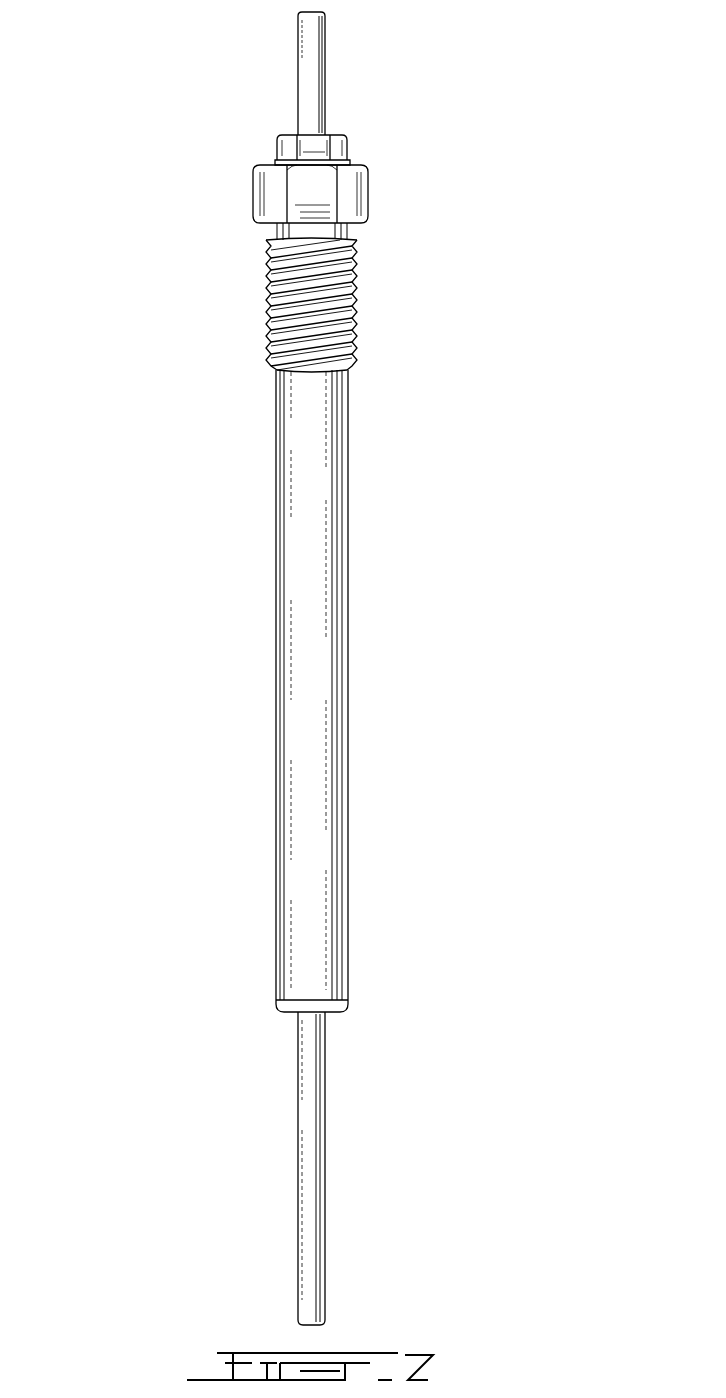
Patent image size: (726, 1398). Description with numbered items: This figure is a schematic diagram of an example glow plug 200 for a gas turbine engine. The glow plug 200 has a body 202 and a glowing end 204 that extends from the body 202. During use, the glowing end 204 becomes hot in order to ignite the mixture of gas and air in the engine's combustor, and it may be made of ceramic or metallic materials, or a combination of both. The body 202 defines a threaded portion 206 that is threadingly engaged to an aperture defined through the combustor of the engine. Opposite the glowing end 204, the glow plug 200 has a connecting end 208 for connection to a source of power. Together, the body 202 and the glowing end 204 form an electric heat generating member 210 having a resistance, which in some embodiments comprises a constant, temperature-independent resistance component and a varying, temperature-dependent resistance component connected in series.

The glow plug 200 is at (186, 178).
The body 202 is at (330, 632).
The glowing end 204 is at (312, 1165).
The threaded portion 206 is at (352, 285).
The connecting end 208 is at (312, 62).
The electric heat generating member 210 is at (197, 370).